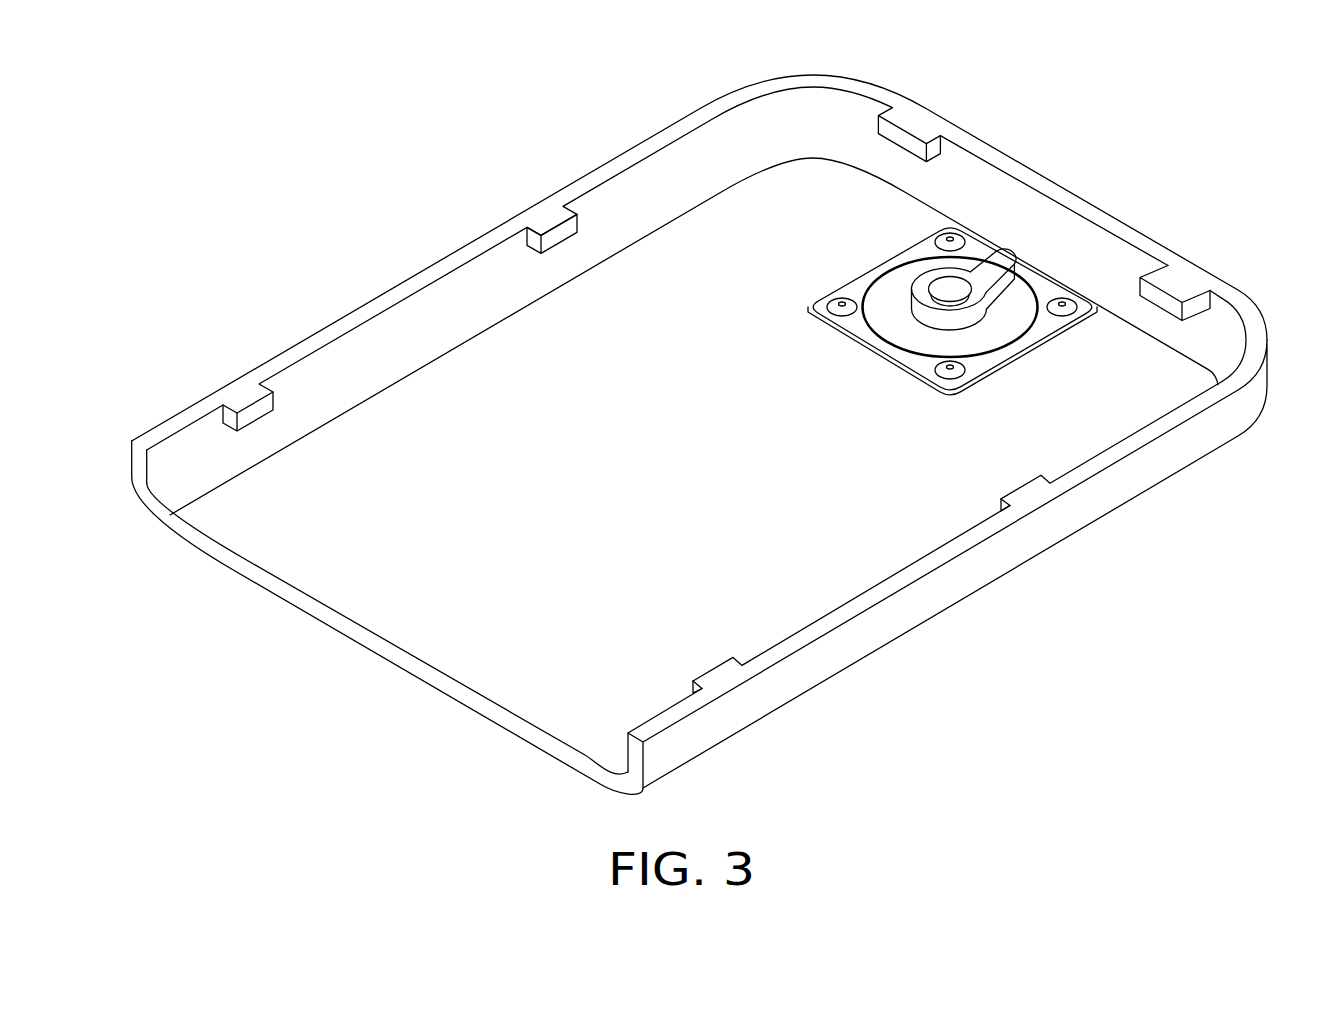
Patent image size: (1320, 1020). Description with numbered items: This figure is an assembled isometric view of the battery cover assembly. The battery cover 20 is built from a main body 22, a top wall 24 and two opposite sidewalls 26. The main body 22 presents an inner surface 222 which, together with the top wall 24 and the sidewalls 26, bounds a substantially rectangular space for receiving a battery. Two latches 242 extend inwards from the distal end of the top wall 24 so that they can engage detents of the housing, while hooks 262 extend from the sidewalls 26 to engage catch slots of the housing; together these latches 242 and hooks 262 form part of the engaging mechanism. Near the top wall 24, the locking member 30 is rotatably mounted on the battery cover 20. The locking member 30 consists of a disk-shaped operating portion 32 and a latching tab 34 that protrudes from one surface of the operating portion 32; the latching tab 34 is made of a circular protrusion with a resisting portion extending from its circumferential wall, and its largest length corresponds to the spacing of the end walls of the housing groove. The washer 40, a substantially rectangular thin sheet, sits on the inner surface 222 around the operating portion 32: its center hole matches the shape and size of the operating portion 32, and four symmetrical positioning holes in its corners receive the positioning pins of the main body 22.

The battery cover 20 is at (294, 329).
The main body 22 is at (400, 543).
The top wall 24 is at (1155, 254).
The sidewalls 26 is at (1127, 485).
The locking member 30 is at (1137, 143).
The operating portion 32 is at (1017, 303).
The latching tab 34 is at (995, 258).
The washer 40 is at (908, 250).
The inner surface 222 is at (873, 557).
The latches 242 is at (910, 132).
The hooks 262 is at (553, 217).